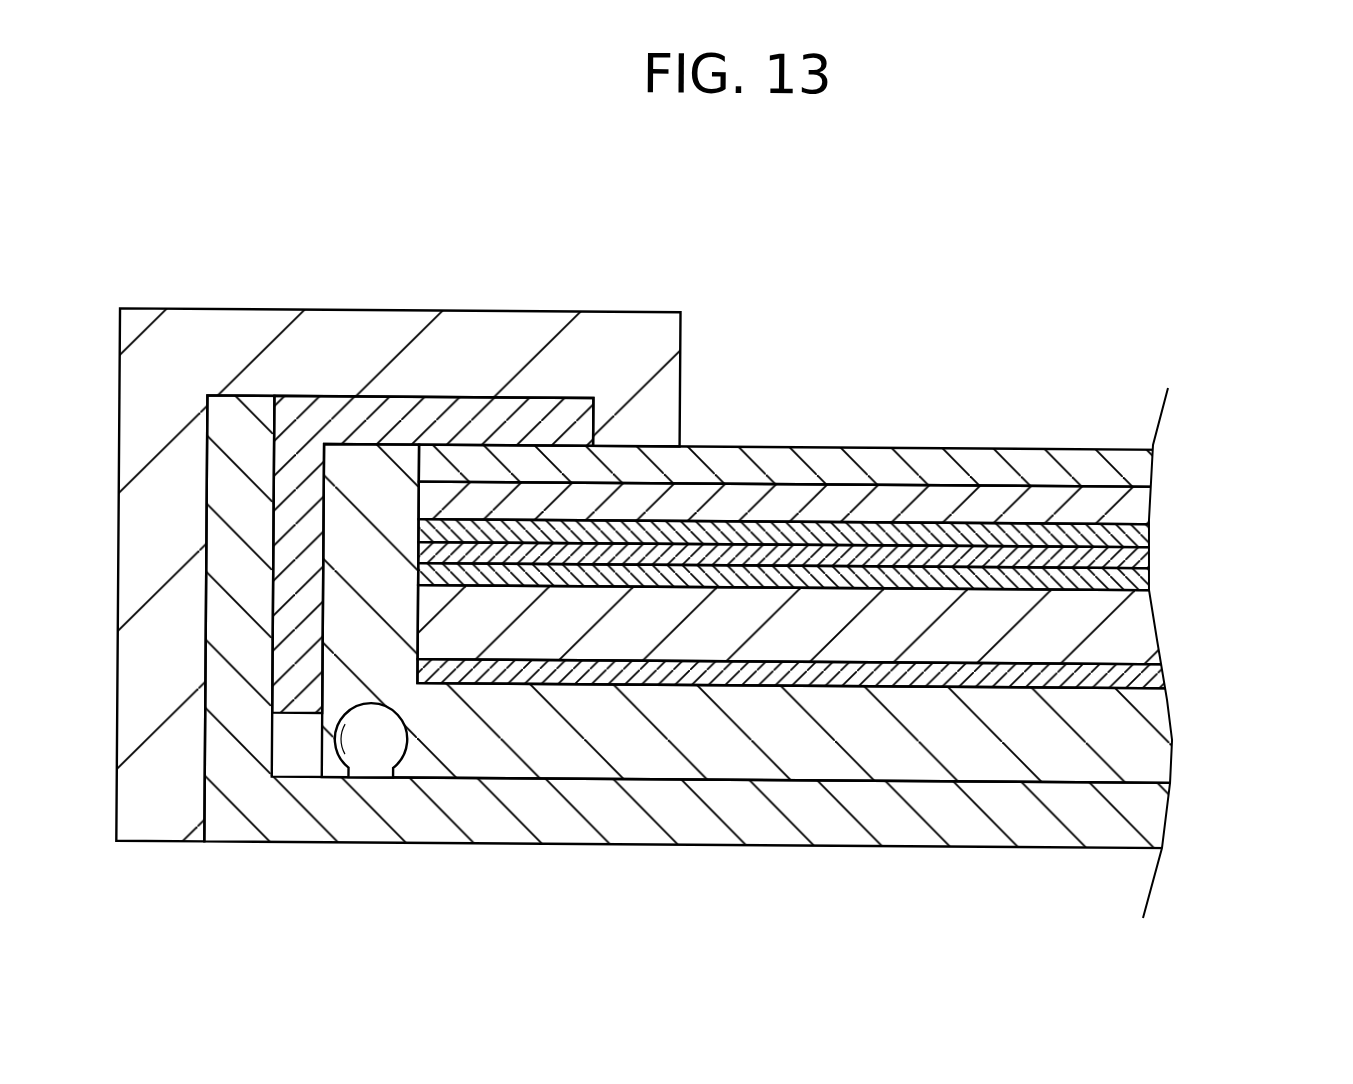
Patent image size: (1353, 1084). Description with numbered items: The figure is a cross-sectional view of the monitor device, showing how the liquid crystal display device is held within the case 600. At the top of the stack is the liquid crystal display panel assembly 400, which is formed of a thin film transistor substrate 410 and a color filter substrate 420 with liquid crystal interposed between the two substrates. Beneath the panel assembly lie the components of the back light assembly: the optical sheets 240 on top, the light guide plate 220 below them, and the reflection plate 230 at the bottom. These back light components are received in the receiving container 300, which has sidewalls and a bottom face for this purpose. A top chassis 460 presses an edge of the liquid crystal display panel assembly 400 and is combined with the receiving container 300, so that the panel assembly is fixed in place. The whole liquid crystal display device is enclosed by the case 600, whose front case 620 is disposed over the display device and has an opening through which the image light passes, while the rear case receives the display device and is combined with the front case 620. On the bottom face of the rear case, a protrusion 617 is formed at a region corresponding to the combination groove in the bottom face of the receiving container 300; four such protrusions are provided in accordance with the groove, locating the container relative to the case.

The front case 620 is at (467, 347).
The case 600 is at (884, 856).
The top chassis 460 is at (582, 417).
The receiving container 300 is at (1186, 738).
The protrusion 617 is at (387, 737).
The color filter substrate 420 is at (1142, 464).
The thin film transistor substrate 410 is at (1142, 494).
The liquid crystal display panel assembly 400 is at (1256, 436).
The optical sheets 240 is at (1152, 540).
The light guide plate 220 is at (1142, 618).
The reflection plate 230 is at (1166, 671).